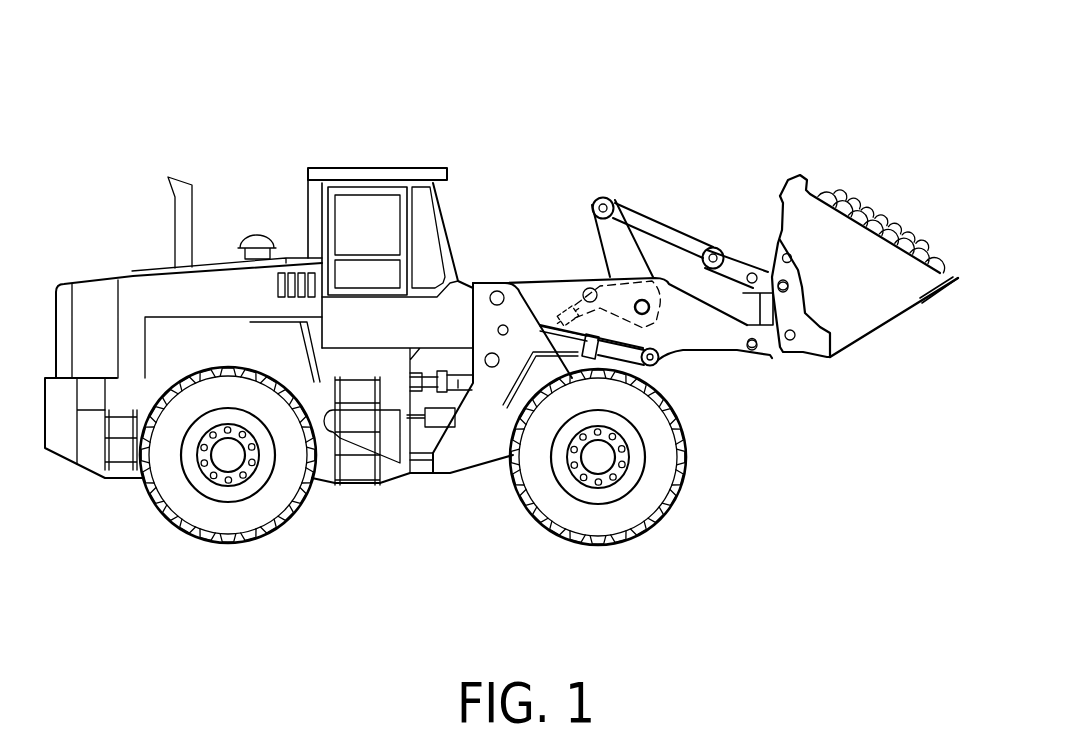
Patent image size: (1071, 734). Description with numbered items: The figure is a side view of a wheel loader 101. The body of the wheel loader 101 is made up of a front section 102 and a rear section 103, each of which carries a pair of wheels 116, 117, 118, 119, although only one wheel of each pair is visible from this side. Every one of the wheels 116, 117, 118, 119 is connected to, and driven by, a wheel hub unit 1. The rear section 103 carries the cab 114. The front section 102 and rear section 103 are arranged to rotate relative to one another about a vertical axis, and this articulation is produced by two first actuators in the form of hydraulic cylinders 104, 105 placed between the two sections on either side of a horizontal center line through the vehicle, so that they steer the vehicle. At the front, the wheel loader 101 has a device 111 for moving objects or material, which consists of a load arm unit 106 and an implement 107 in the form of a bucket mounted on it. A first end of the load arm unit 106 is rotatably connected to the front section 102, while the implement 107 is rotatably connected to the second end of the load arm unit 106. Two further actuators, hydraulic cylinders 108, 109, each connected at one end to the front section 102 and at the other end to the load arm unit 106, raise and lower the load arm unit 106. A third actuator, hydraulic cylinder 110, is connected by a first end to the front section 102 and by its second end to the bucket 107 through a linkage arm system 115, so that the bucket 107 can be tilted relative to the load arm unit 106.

The wheel hub unit 1 is at (225, 457).
The wheel loader 101 is at (327, 66).
The front section 102 is at (460, 452).
The rear section 103 is at (92, 452).
The hydraulic cylinder 104 is at (459, 497).
The hydraulic cylinder 105 is at (457, 382).
The load arm unit 106 is at (770, 350).
The implement 107 is at (853, 312).
The hydraulic cylinder 108 is at (697, 393).
The hydraulic cylinder 109 is at (625, 356).
The hydraulic cylinder 110 is at (558, 303).
The device for moving objects or material 111 is at (694, 84).
The cab 114 is at (410, 167).
The linkage arm system 115 is at (668, 237).
The wheel 116 is at (228, 490).
The wheel 117 is at (232, 520).
The wheel 118 is at (611, 487).
The wheel 119 is at (598, 520).